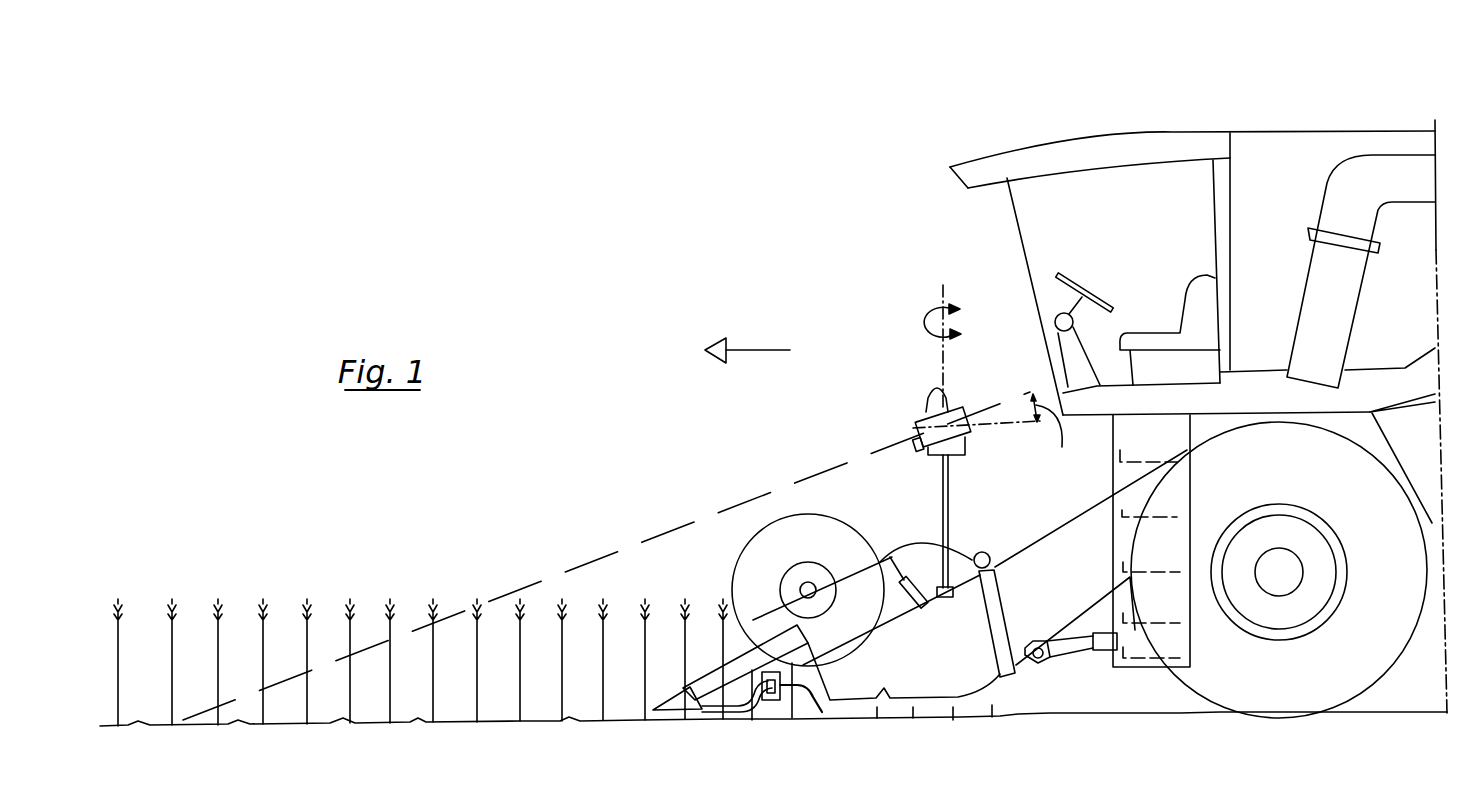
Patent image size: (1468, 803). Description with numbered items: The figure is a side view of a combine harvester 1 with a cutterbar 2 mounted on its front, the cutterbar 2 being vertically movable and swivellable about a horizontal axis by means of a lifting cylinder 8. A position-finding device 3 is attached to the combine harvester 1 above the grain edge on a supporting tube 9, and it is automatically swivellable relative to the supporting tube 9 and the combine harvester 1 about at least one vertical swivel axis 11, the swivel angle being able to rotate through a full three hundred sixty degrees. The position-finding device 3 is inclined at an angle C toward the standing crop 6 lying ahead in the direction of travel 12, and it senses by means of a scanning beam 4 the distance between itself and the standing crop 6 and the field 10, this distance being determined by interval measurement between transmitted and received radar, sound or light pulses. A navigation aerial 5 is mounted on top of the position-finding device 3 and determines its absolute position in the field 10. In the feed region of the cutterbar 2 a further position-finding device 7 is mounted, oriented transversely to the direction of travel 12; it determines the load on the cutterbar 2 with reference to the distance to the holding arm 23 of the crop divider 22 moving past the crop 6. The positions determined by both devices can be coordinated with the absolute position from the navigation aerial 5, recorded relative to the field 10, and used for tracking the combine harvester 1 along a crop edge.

The combine harvester 1 is at (1046, 136).
The cutterbar 2 is at (919, 676).
The position-finding device 3 is at (915, 425).
The scanning beam 4 is at (625, 553).
The navigation aerial 5 is at (932, 397).
The standing crop 6 is at (218, 613).
The further position-finding device 7 is at (773, 698).
The lifting cylinder 8 is at (1102, 650).
The supporting tube 9 is at (947, 505).
The field 10 is at (488, 727).
The vertical swivel axis 11 is at (943, 298).
The direction of travel 12 is at (752, 350).
The crop divider 22 is at (677, 703).
The holding arm 23 is at (728, 707).
The angle c C is at (1052, 431).